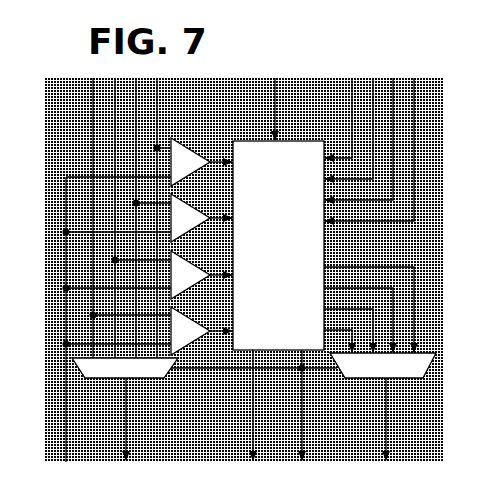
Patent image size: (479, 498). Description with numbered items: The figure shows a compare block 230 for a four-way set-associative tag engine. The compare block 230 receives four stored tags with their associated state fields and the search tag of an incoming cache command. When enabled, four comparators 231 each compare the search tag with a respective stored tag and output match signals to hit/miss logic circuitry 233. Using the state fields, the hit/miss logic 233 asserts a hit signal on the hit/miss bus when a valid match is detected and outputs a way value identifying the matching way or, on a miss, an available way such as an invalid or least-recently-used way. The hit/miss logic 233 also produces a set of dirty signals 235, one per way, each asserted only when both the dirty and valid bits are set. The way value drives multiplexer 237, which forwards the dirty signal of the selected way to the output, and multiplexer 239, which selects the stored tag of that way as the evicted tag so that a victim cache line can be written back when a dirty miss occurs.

The compare block 230 is at (246, 247).
The comparators 231 is at (181, 150).
The hit/miss logic circuitry 233 is at (278, 245).
The dirty signals 235 is at (360, 256).
The multiplexer 237 is at (363, 383).
The multiplexer 239 is at (153, 383).